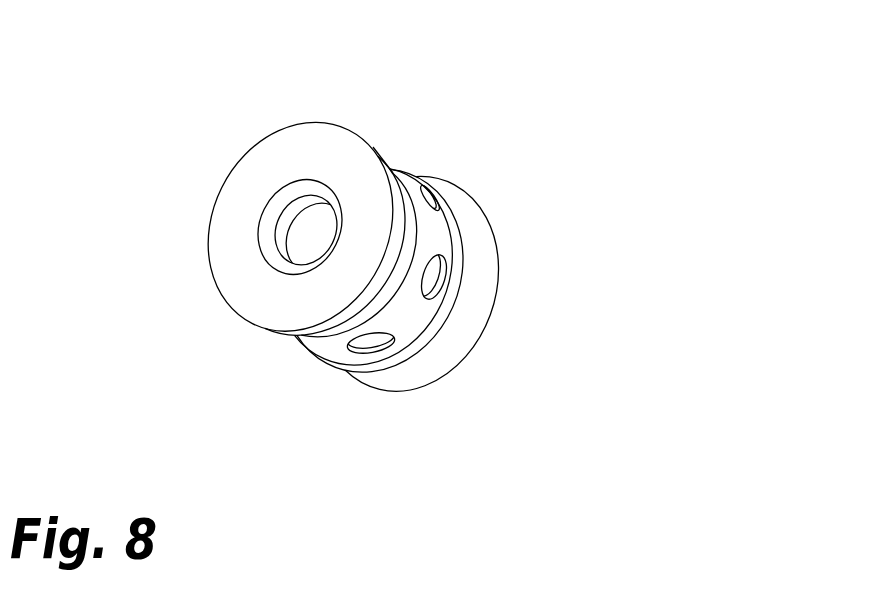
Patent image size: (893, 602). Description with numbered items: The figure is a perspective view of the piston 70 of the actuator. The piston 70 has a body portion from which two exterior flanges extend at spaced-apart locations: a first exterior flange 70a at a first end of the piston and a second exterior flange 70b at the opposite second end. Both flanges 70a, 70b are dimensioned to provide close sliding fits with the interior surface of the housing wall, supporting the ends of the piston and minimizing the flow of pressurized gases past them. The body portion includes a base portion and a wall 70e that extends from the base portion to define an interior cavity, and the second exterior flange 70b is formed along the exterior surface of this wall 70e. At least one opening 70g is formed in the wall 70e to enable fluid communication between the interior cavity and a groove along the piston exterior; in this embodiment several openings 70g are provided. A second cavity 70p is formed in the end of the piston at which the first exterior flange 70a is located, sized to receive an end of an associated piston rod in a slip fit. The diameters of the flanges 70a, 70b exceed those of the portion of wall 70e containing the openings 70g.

The piston 70 is at (80, 270).
The first exterior flange 70a is at (350, 130).
The second cavity 70p is at (300, 242).
The wall 70e is at (430, 227).
The opening 70g is at (413, 287).
The second exterior flange 70b is at (473, 315).